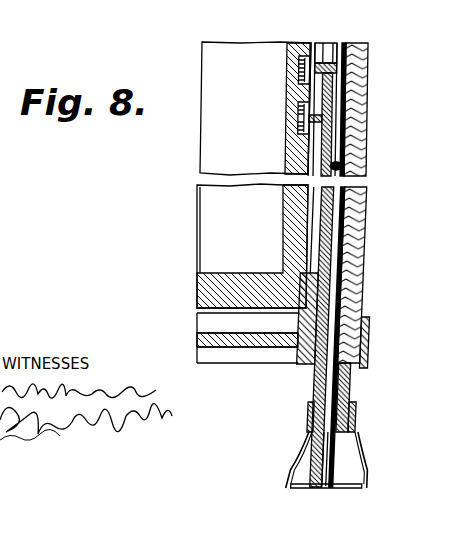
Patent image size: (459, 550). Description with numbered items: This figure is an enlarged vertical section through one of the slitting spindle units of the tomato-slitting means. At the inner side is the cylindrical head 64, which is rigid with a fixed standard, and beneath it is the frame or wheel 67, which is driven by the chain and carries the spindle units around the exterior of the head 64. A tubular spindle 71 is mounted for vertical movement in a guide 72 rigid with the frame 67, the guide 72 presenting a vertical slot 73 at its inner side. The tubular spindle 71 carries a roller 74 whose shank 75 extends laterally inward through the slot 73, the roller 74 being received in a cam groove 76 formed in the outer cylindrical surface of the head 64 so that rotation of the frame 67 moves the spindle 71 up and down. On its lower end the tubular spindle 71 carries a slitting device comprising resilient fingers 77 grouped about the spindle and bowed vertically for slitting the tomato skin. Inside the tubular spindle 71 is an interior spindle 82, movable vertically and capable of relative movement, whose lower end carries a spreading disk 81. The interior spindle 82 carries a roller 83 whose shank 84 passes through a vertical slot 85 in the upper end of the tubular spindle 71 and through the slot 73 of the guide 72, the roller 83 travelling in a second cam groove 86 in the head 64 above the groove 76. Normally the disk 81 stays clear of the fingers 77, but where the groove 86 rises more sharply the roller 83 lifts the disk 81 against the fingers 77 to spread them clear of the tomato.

The cylindrical head 64 is at (229, 48).
The frame or wheel 67 is at (248, 362).
The tubular spindle 71 is at (362, 228).
The guide 72 is at (370, 275).
The vertical slot 73 is at (320, 238).
The roller 74 is at (309, 118).
The shank 75 is at (298, 129).
The cam groove 76 is at (300, 110).
The resilient fingers 77 is at (377, 476).
The disk 81 is at (314, 458).
The spindle 82 is at (342, 393).
The roller 83 is at (313, 46).
The shank 84 is at (320, 47).
The vertical slot 85 is at (331, 45).
The second cam groove 86 is at (300, 81).